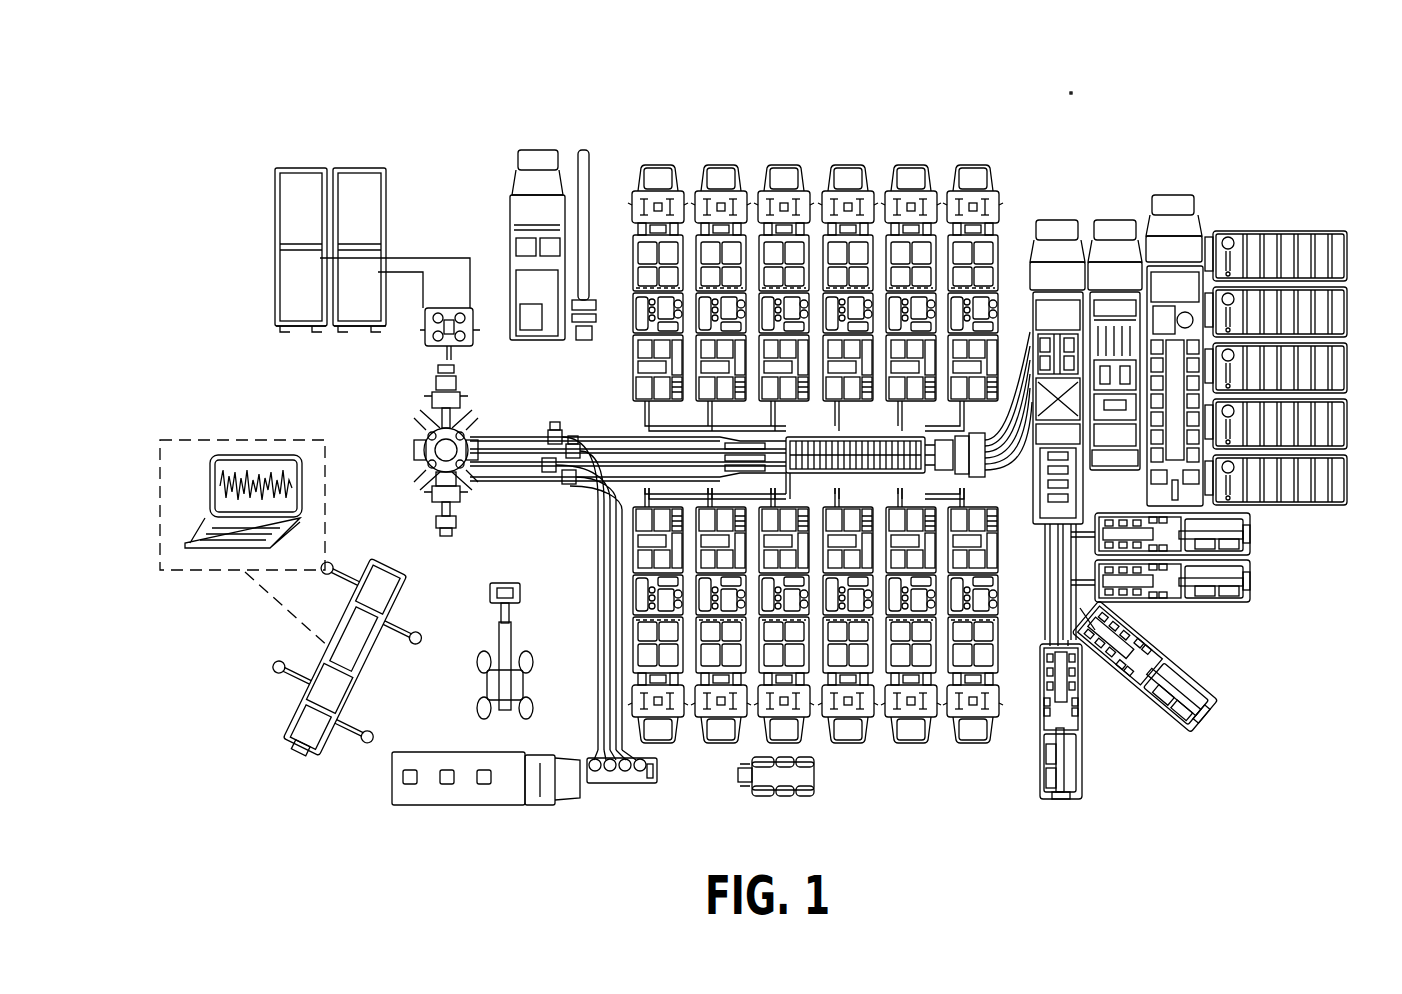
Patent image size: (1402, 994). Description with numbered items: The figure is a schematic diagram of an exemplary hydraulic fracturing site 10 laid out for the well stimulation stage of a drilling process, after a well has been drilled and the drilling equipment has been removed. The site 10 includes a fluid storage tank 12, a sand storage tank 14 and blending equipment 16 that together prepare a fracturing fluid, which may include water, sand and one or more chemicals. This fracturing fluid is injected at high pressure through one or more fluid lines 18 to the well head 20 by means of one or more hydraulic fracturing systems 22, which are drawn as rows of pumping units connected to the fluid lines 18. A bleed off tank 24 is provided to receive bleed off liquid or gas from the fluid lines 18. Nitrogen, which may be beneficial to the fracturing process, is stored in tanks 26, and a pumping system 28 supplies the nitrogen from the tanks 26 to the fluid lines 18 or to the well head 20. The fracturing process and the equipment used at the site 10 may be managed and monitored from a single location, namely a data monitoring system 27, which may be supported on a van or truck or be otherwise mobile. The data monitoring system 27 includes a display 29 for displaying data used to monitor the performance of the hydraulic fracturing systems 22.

The hydraulic fracturing site 10 is at (1076, 90).
The fluid storage tank 12 is at (1226, 612).
The sand storage tank 14 is at (1366, 302).
The blending equipment 16 is at (1052, 200).
The fluid lines 18 is at (625, 428).
The well head 20 is at (410, 432).
The hydraulic fracturing systems 22 is at (990, 158).
The bleed off tank 24 is at (557, 812).
The nitrogen tanks 26 is at (352, 148).
The data monitoring system 27 is at (282, 680).
The pumping system 28 is at (400, 348).
The display 29 is at (200, 486).